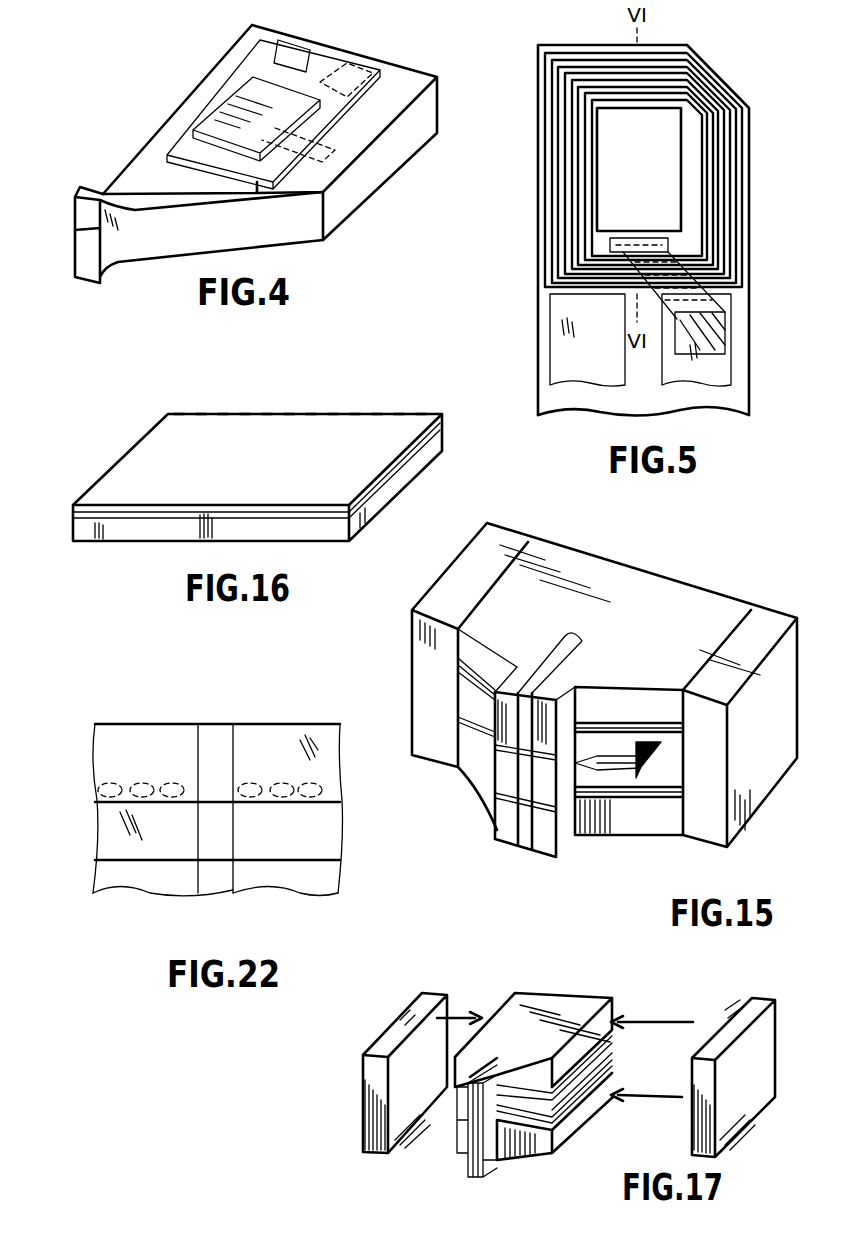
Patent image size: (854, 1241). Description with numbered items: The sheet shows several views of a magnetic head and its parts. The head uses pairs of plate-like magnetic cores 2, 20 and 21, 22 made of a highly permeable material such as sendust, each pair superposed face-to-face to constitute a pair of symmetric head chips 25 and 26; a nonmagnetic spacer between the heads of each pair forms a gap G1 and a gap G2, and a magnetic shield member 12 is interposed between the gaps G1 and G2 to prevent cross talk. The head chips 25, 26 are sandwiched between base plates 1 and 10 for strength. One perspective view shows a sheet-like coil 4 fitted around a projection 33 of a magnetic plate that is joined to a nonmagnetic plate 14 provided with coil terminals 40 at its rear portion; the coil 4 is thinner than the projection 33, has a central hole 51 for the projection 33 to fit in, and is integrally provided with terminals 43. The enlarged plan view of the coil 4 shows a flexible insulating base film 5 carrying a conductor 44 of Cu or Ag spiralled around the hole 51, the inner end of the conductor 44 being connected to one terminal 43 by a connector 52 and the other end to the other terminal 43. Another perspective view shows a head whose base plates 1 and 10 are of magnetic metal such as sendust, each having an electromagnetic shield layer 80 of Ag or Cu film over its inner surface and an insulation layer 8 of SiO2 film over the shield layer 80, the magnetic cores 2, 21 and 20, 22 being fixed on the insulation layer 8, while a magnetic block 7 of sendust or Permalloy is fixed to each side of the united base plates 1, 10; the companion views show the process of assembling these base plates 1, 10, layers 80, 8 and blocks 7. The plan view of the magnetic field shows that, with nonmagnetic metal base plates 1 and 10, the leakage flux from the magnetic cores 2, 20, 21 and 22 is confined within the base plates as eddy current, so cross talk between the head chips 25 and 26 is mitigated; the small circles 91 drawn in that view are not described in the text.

In FIG. 22, the base plate 1 is at (310, 735).
In FIG. 15, the base plate 1 is at (629, 705).
In FIG. 17, the base plate 1 is at (570, 1010).
In FIG. 22, the magnetic core 2 is at (255, 840).
In FIG. 15, the magnetic core 2 is at (553, 836).
In FIG. 4, the sheet-like coil 4 is at (185, 145).
In FIG. 5, the sheet-like coil 4 is at (716, 50).
In FIG. 15, the sheet-like coil 4 is at (493, 721).
In FIG. 5, the base film 5 is at (538, 138).
In FIG. 15, the magnetic block 7 is at (477, 546).
In FIG. 17, the magnetic block 7 is at (428, 993).
In FIG. 16, the insulation layer 8 is at (143, 452).
In FIG. 15, the insulation layer 8 is at (677, 747).
In FIG. 17, the insulation layer 8 is at (597, 1068).
In FIG. 4, the base plate 10 is at (413, 142).
In FIG. 15, the base plate 10 is at (617, 853).
In FIG. 17, the base plate 10 is at (580, 1120).
In FIG. 22, the magnetic shield member 12 is at (215, 724).
In FIG. 15, the magnetic shield member 12 is at (571, 636).
In FIG. 17, the magnetic shield member 12 is at (477, 1117).
In FIG. 16, the nonmagnetic plate 14 is at (425, 458).
In FIG. 4, the magnetic core 20 is at (183, 197).
In FIG. 22, the magnetic core 20 is at (298, 885).
In FIG. 15, the magnetic core 20 is at (521, 846).
In FIG. 22, the magnetic core 21 is at (128, 812).
In FIG. 15, the magnetic core 21 is at (504, 747).
In FIG. 22, the magnetic core 22 is at (138, 880).
In FIG. 15, the magnetic core 22 is at (505, 770).
In FIG. 15, the head chip 25 is at (557, 919).
In FIG. 15, the head chip 26 is at (433, 818).
In FIG. 4, the projection 33 is at (227, 117).
In FIG. 16, the coil terminal 40 is at (393, 412).
In FIG. 4, the terminal 43 is at (290, 57).
In FIG. 5, the terminal 43 is at (560, 350).
In FIG. 5, the conductor 44 is at (553, 92).
In FIG. 4, the central hole 51 is at (293, 131).
In FIG. 5, the central hole 51 is at (602, 169).
In FIG. 5, the connector 52 is at (706, 304).
In FIG. 16, the electromagnetic shield layer 80 is at (439, 434).
In FIG. 15, the electromagnetic shield layer 80 is at (659, 722).
In FIG. 17, the electromagnetic shield layer 80 is at (610, 1032).
In FIG. 22, the winding holes 91 is at (255, 780).
In FIG. 22, the gap G1 is at (283, 860).
In FIG. 15, the gap G1 is at (546, 799).
In FIG. 22, the gap G2 is at (170, 860).
In FIG. 15, the gap G2 is at (550, 777).